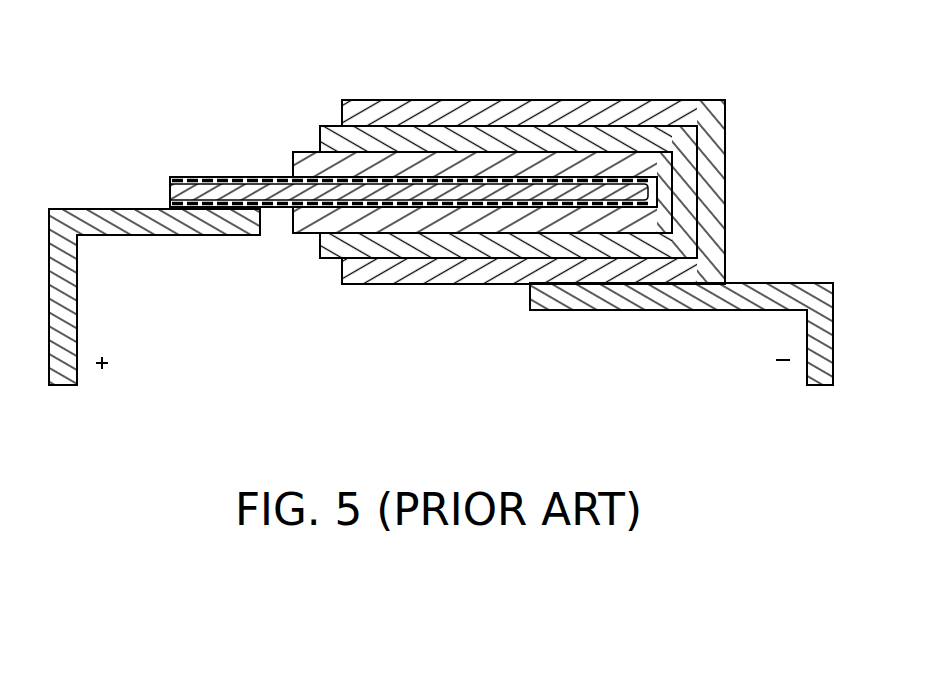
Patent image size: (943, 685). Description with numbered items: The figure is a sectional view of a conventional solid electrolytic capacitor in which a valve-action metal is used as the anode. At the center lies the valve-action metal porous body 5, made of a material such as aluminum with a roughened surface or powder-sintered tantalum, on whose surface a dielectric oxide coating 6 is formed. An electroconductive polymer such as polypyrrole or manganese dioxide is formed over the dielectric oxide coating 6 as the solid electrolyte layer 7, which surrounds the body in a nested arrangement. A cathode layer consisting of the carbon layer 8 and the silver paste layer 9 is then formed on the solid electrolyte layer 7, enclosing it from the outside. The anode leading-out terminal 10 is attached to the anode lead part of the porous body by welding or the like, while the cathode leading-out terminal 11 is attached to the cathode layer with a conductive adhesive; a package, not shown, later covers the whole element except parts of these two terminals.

The valve-action metal porous body 5 is at (255, 192).
The dielectric oxide coating 6 is at (280, 210).
The solid electrolyte layer 7 is at (380, 153).
The carbon layer 8 is at (467, 127).
The silver paste layer 9 is at (560, 100).
The anode leading-out terminal 10 is at (87, 212).
The cathode leading-out terminal 11 is at (580, 305).